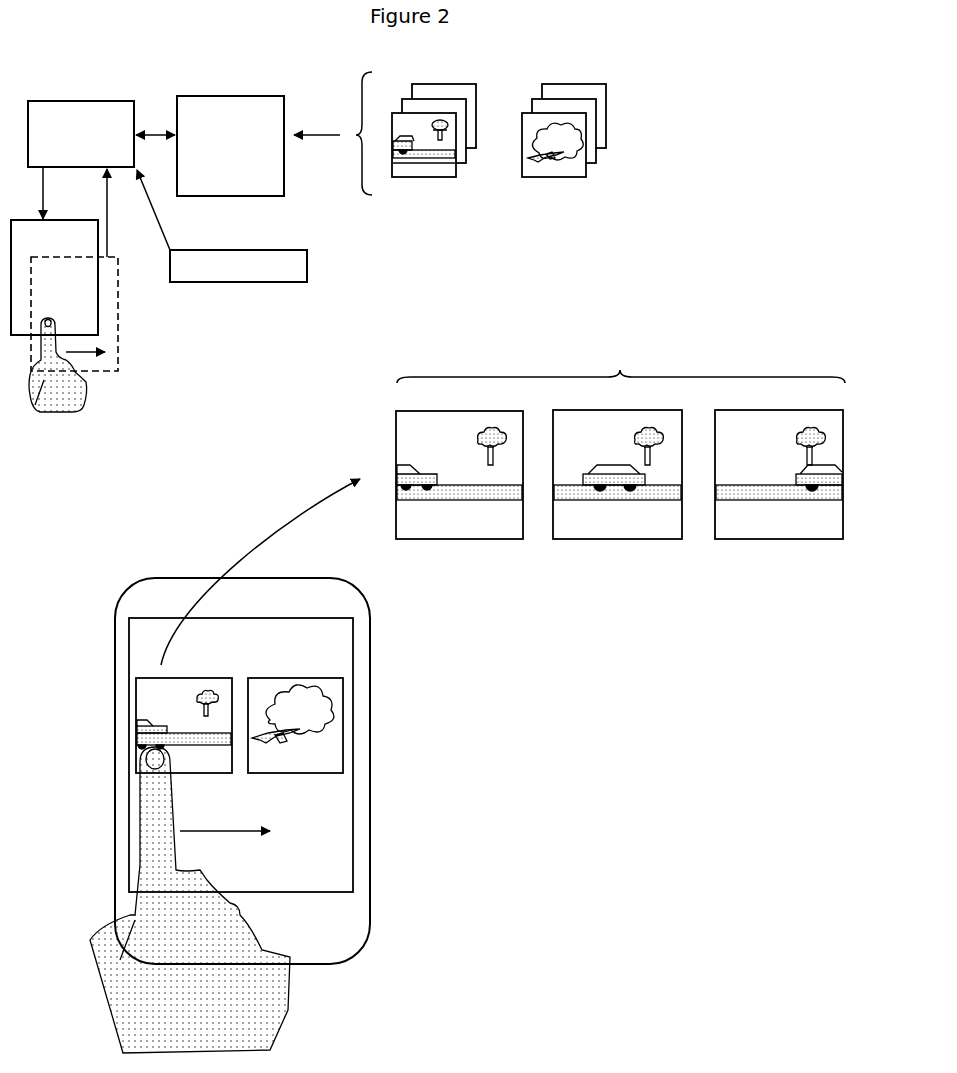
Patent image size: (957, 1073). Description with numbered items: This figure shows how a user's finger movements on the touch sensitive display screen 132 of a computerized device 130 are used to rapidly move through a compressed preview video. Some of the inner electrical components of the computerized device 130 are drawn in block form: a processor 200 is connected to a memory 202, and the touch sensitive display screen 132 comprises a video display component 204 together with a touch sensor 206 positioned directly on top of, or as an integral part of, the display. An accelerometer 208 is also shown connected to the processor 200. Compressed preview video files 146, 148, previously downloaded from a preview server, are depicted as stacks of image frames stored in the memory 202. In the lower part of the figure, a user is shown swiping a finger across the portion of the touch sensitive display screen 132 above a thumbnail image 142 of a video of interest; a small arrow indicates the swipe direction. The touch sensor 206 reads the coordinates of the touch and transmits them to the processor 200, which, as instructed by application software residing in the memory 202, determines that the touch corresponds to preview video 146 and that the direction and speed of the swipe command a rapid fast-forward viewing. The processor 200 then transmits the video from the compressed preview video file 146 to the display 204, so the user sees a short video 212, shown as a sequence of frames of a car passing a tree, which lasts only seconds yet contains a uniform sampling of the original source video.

The processor 200 is at (81, 134).
The memory 202 is at (230, 146).
The video display component 204 is at (58, 218).
The touch sensor 206 is at (124, 352).
The accelerometer 208 is at (235, 290).
The compressed preview video file 146 is at (440, 76).
The compressed preview video file 148 is at (565, 76).
The short video 212 is at (620, 360).
The computerized device 130 is at (161, 573).
The touch sensitive display screen 132 is at (328, 648).
The thumbnail image 142 is at (148, 700).